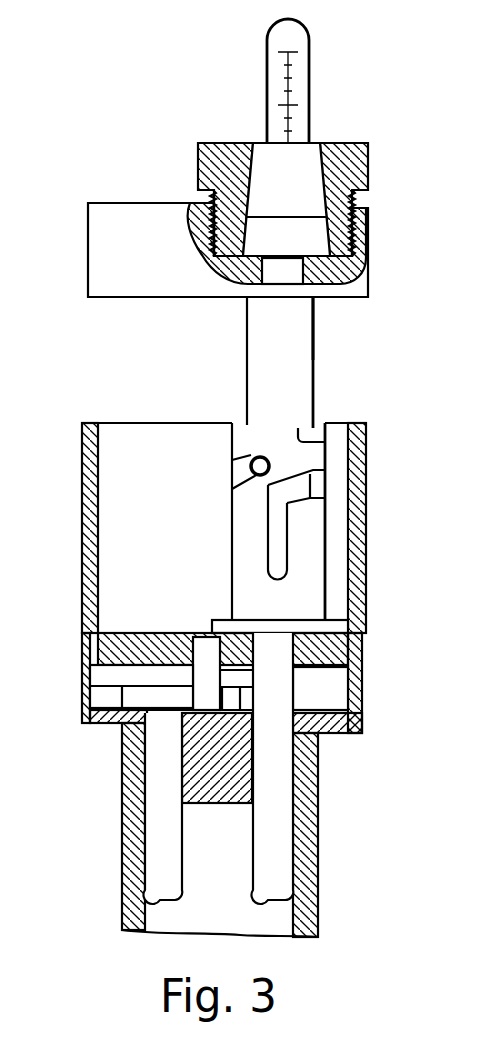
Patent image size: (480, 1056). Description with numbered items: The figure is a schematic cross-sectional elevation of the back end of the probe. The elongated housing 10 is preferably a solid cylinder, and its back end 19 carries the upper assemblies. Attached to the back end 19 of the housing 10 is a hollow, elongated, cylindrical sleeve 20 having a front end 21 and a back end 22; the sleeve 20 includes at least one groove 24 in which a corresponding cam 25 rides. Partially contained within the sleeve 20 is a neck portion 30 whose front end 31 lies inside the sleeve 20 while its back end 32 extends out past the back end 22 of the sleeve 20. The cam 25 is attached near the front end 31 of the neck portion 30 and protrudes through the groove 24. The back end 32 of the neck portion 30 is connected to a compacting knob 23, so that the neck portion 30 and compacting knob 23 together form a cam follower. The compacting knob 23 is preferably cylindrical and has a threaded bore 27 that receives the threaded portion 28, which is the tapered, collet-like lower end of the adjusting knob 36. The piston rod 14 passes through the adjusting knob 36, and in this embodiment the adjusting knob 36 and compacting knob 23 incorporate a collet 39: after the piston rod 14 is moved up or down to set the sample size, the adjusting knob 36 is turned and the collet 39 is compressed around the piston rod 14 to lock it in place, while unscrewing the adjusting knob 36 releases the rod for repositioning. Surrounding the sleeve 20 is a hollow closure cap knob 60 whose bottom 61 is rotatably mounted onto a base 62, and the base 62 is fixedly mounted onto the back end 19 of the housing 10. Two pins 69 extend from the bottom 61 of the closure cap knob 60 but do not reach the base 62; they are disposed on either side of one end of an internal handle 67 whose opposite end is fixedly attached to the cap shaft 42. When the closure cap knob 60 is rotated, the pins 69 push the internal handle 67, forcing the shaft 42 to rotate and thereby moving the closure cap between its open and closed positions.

The housing 10 is at (232, 876).
The piston rod 14 is at (272, 852).
The back end 19 is at (127, 742).
The sleeve 20 is at (302, 580).
The front end 21 is at (297, 617).
The back end 22 is at (335, 430).
The compacting knob 23 is at (108, 250).
The groove 24 is at (275, 553).
The cam 25 is at (256, 456).
The threaded bore 27 is at (368, 226).
The threaded portion 28 is at (212, 200).
The neck portion 30 is at (296, 370).
The front end 31 is at (330, 485).
The back end 32 is at (296, 305).
The adjusting knob 36 is at (205, 143).
The collet 39 is at (285, 180).
The cap shaft 42 is at (165, 855).
The closure cap knob 60 is at (82, 540).
The bottom 61 is at (148, 650).
The base 62 is at (75, 685).
The internal handle 67 is at (145, 692).
The pins 69 is at (210, 682).